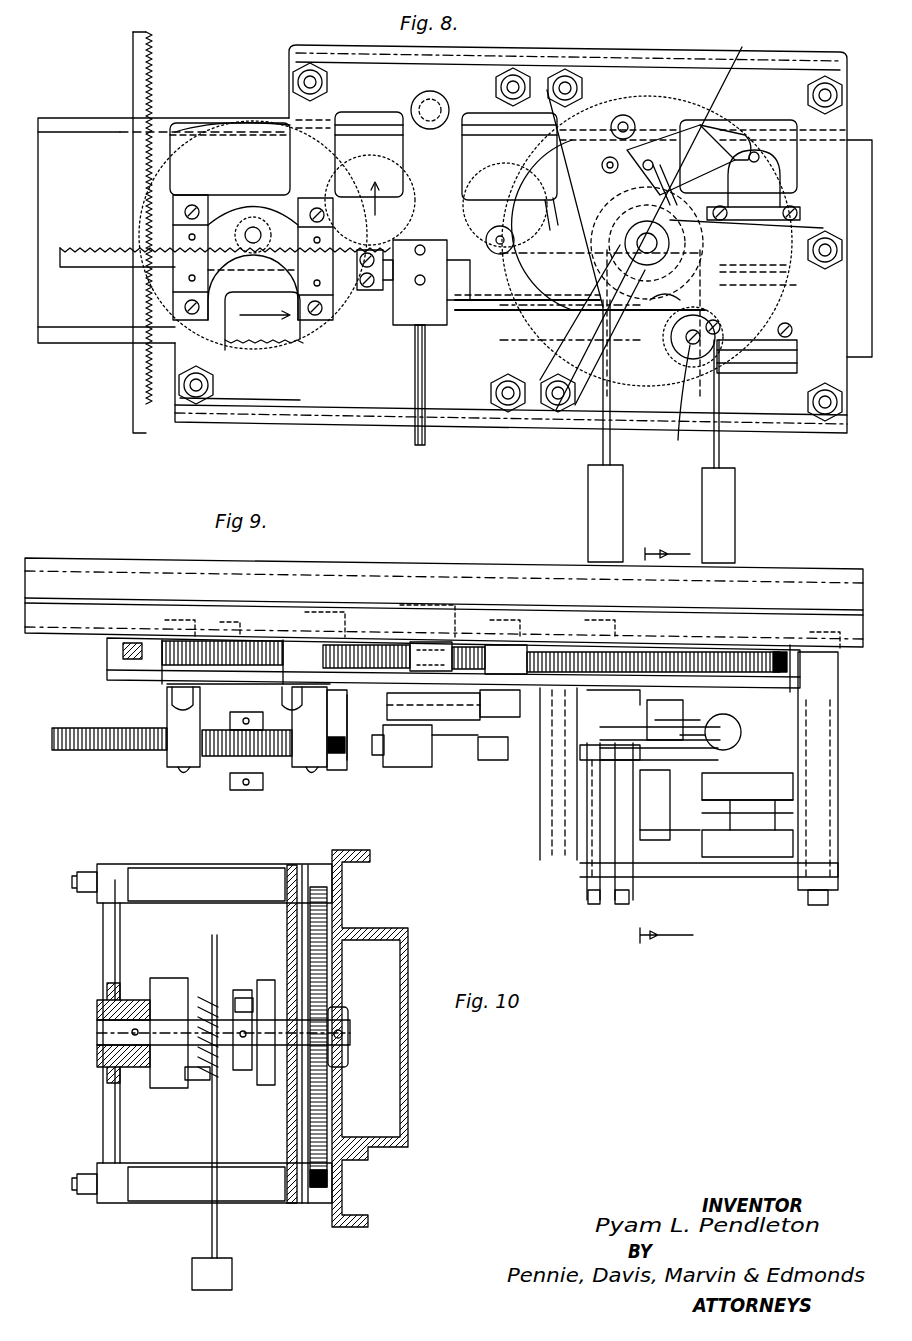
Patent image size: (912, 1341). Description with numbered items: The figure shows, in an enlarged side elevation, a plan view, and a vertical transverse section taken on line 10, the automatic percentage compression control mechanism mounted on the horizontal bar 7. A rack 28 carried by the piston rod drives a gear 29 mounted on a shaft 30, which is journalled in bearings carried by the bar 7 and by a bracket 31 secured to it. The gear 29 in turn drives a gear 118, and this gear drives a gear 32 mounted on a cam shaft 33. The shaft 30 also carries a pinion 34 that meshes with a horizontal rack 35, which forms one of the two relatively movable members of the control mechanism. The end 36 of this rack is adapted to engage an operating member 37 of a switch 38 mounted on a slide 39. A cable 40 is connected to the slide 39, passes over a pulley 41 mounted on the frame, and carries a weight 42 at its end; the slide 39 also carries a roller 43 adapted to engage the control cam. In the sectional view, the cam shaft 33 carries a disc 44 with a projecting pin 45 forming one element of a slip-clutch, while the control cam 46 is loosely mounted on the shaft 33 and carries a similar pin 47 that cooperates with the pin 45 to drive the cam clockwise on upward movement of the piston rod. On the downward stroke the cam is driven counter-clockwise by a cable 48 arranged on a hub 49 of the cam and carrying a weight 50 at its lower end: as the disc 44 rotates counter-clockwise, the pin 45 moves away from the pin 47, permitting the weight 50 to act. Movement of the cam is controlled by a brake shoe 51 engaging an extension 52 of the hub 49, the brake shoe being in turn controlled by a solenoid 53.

In FIG. 8, the horizontal bar 7 is at (58, 120).
In FIG. 9, the horizontal bar 7 is at (42, 560).
In FIG. 10, the horizontal bar 7 is at (408, 1122).
In FIG. 8, the section line 10— 10 is at (667, 542).
In FIG. 9, the section line 10— 10 is at (666, 946).
In FIG. 8, the rack 28 is at (135, 48).
In FIG. 9, the rack 28 is at (123, 655).
In FIG. 8, the gear 29 is at (250, 120).
In FIG. 9, the gear 29 is at (178, 645).
In FIG. 8, the shaft 30 is at (251, 226).
In FIG. 9, the shaft 30 is at (240, 702).
In FIG. 8, the bracket 31 is at (312, 345).
In FIG. 9, the bracket 31 is at (322, 767).
In FIG. 8, the gear 32 is at (680, 95).
In FIG. 9, the gear 32 is at (682, 761).
In FIG. 10, the gear 32 is at (328, 980).
In FIG. 8, the cam shaft 33 is at (640, 243).
In FIG. 9, the cam shaft 33 is at (660, 720).
In FIG. 10, the cam shaft 33 is at (320, 1070).
In FIG. 8, the pinion 34 is at (225, 195).
In FIG. 9, the pinion 34 is at (225, 757).
In FIG. 8, the horizontal rack 35 is at (225, 237).
In FIG. 9, the horizontal rack 35 is at (105, 752).
In FIG. 8, the end of rack 36 is at (360, 292).
In FIG. 9, the end of rack 36 is at (347, 755).
In FIG. 8, the operating member 37 is at (386, 292).
In FIG. 9, the operating member 37 is at (380, 755).
In FIG. 8, the switch 38 is at (400, 325).
In FIG. 9, the switch 38 is at (410, 760).
In FIG. 8, the slide 39 is at (470, 245).
In FIG. 9, the slide 39 is at (450, 725).
In FIG. 8, the cable 40 is at (510, 305).
In FIG. 9, the cable 40 is at (520, 717).
In FIG. 8, the pulley 41 is at (692, 406).
In FIG. 9, the pulley 41 is at (735, 722).
In FIG. 8, the weight 42 is at (735, 512).
In FIG. 9, the weight 42 is at (730, 740).
In FIG. 8, the roller 43 is at (500, 230).
In FIG. 9, the roller 43 is at (495, 760).
In FIG. 9, the disc 44 is at (680, 700).
In FIG. 10, the disc 44 is at (265, 1085).
In FIG. 8, the projecting pin 45 is at (670, 178).
In FIG. 9, the projecting pin 45 is at (625, 720).
In FIG. 10, the projecting pin 45 is at (250, 990).
In FIG. 8, the control cam 46 is at (555, 298).
In FIG. 9, the control cam 46 is at (718, 755).
In FIG. 10, the control cam 46 is at (205, 990).
In FIG. 8, the pin 47 is at (688, 189).
In FIG. 9, the pin 47 is at (690, 715).
In FIG. 10, the pin 47 is at (245, 998).
In FIG. 8, the cable 48 is at (602, 443).
In FIG. 9, the cable 48 is at (710, 780).
In FIG. 10, the cable 48 is at (205, 950).
In FIG. 9, the hub 49 is at (690, 830).
In FIG. 10, the hub 49 is at (192, 1080).
In FIG. 8, the weight 50 is at (590, 505).
In FIG. 9, the weight 50 is at (588, 790).
In FIG. 10, the weight 50 is at (232, 1278).
In FIG. 8, the brake shoe 51 is at (664, 212).
In FIG. 9, the brake shoe 51 is at (630, 860).
In FIG. 8, the extension 52 is at (600, 215).
In FIG. 9, the extension 52 is at (690, 800).
In FIG. 10, the extension 52 is at (168, 977).
In FIG. 8, the solenoid 53 is at (790, 198).
In FIG. 9, the solenoid 53 is at (755, 858).
In FIG. 8, the gear 118 is at (385, 185).
In FIG. 9, the gear 118 is at (385, 647).